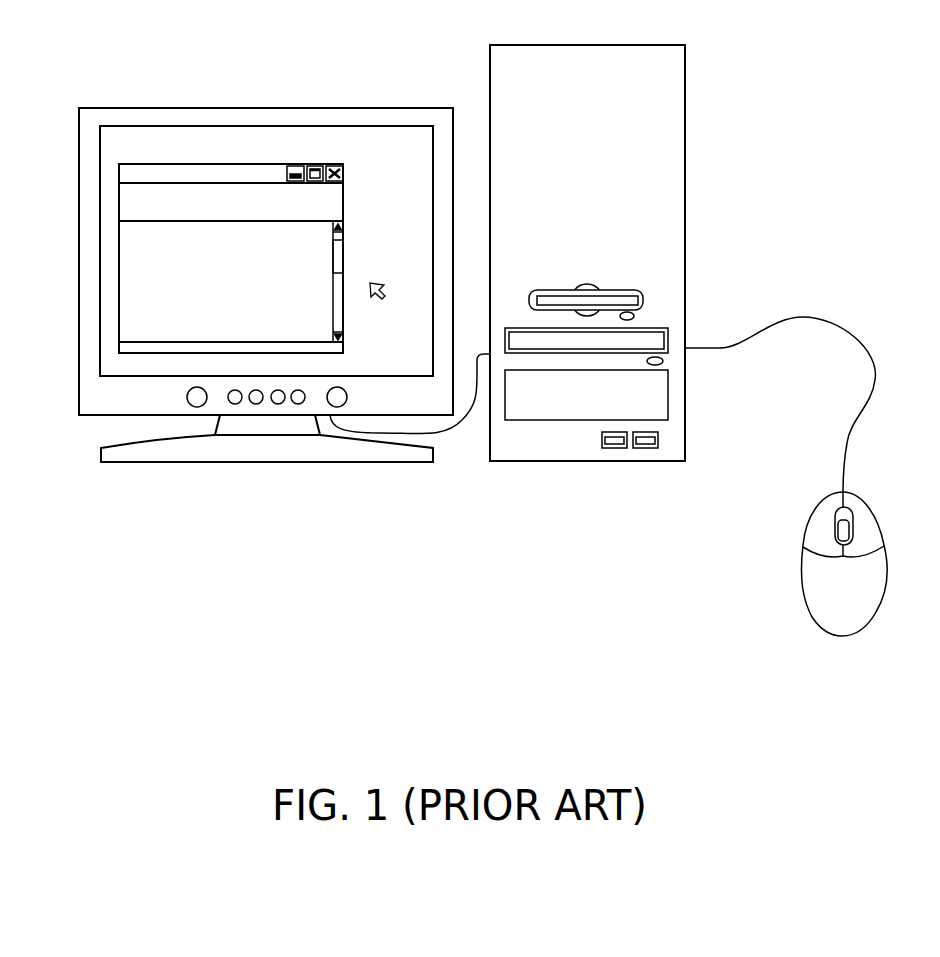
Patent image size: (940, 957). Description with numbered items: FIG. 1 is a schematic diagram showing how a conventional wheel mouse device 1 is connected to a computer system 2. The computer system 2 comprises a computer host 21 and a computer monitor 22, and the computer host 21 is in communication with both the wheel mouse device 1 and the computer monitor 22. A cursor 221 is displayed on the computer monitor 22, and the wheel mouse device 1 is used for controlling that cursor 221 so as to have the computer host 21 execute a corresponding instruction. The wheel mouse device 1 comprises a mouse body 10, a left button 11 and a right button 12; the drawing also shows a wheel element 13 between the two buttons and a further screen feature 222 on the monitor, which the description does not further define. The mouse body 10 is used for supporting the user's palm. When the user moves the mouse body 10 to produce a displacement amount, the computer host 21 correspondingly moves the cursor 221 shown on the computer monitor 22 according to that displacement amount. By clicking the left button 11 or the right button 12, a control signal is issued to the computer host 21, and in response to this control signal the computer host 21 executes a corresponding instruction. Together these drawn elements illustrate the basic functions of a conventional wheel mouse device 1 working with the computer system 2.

The wheel mouse device 1 is at (829, 573).
The mouse body 10 is at (860, 612).
The left button 11 is at (823, 522).
The right button 12 is at (870, 527).
The scroll wheel 13 is at (837, 513).
The computer system 2 is at (477, 261).
The computer host 21 is at (600, 61).
The computer monitor 22 is at (284, 292).
The cursor 221 is at (192, 202).
The cursor 222 is at (383, 297).